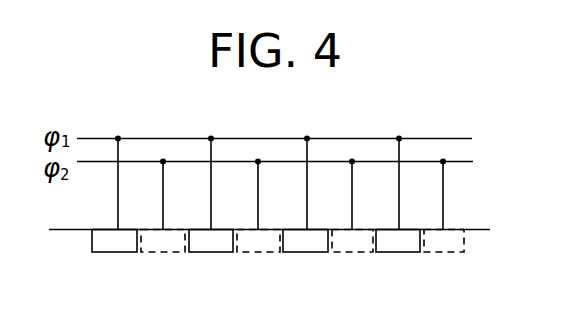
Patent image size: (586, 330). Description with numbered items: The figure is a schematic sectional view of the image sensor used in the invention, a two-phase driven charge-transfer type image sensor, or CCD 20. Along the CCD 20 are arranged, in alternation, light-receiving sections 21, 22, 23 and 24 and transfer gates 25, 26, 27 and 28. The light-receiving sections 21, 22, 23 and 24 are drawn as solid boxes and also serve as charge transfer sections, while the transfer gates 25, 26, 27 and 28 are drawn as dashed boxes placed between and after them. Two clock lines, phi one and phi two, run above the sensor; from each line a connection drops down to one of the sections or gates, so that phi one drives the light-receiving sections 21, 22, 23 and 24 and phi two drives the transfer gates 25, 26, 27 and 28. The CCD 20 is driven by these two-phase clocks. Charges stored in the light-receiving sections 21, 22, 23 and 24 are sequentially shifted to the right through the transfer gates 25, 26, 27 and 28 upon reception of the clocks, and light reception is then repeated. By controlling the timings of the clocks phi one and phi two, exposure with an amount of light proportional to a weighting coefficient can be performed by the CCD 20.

The image sensor 20 is at (472, 238).
The light-receiving section 21 is at (112, 245).
The light-receiving section 22 is at (214, 245).
The light-receiving section 23 is at (310, 245).
The light-receiving section 24 is at (401, 245).
The transfer gate 25 is at (166, 245).
The transfer gate 26 is at (262, 245).
The transfer gate 27 is at (356, 245).
The transfer gate 28 is at (450, 245).